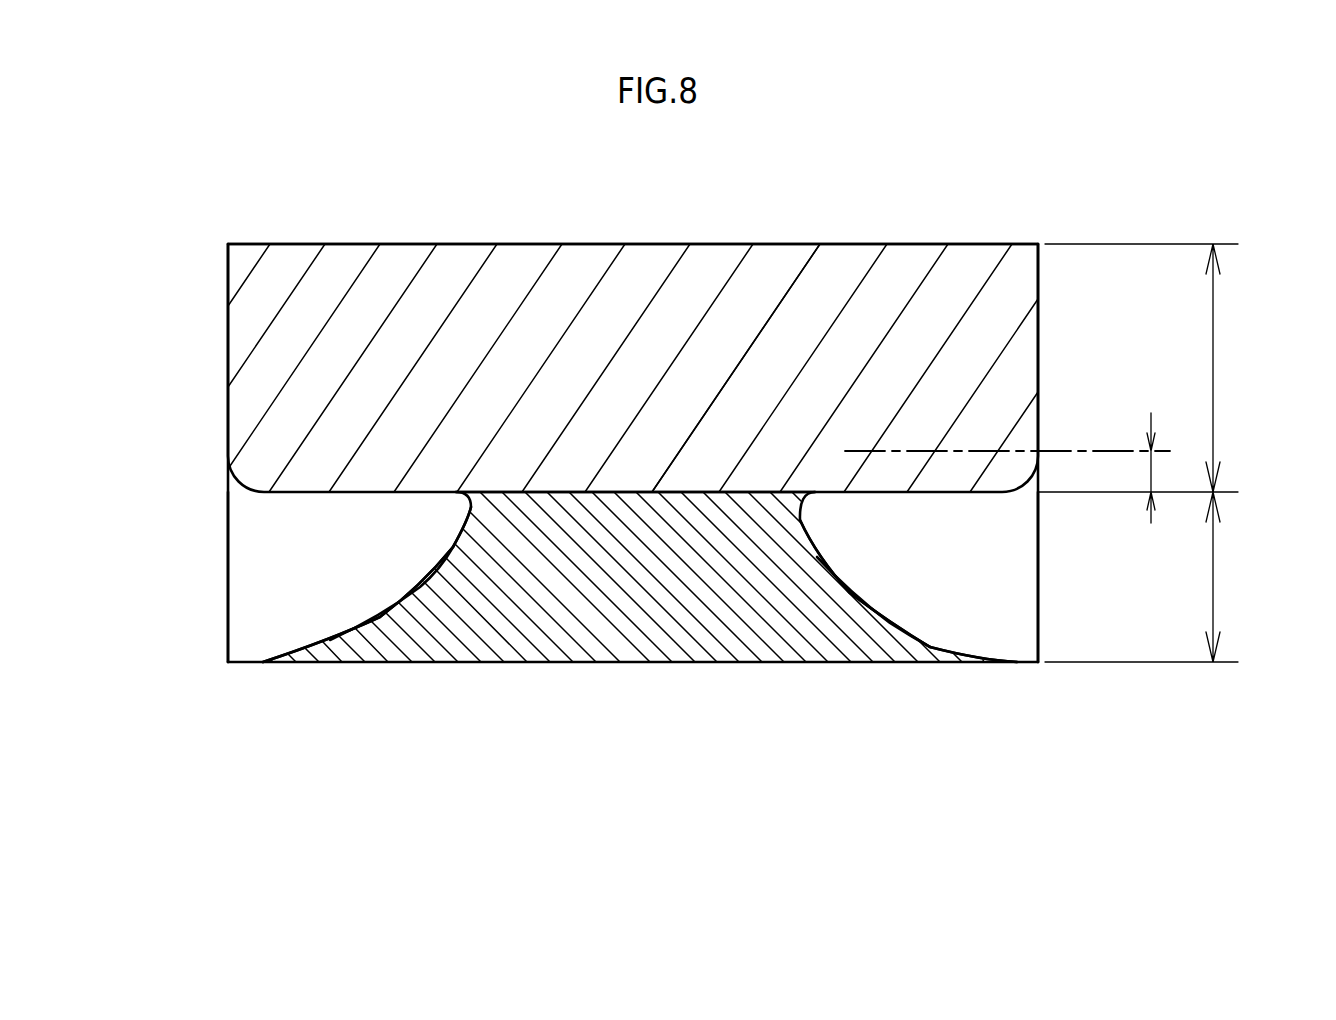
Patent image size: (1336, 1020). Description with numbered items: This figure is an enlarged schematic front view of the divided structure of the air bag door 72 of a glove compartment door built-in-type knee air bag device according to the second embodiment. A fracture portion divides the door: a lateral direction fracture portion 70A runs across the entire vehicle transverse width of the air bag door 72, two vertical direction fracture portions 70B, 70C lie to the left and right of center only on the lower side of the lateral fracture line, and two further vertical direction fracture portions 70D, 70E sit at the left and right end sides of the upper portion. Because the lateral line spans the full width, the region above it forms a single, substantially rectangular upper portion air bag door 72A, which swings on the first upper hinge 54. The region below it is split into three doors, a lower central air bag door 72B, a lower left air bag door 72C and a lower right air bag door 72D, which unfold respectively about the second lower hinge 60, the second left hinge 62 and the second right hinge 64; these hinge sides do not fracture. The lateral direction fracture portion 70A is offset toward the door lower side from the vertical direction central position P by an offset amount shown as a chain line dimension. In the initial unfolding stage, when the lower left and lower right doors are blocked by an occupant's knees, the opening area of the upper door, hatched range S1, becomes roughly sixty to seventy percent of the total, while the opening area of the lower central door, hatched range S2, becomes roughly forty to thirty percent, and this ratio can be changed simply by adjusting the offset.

The air bag door 72 is at (1001, 208).
The upper portion air bag door 72A is at (763, 267).
The lower central air bag door 72B is at (665, 638).
The lower left air bag door 72C is at (357, 598).
The lower right air bag door 72D is at (962, 630).
The first upper hinge 54 is at (858, 244).
The second lower hinge 60 is at (730, 665).
The second left hinge 62 is at (230, 599).
The second right hinge 64 is at (1040, 587).
The lateral direction fracture portion 70A is at (542, 495).
The vertical direction fracture portion 70B is at (407, 605).
The vertical direction fracture portion 70C is at (863, 595).
The vertical direction fracture portion 70D is at (227, 432).
The vertical direction fracture portion 70E is at (1090, 316).
The vertical direction central position P is at (1102, 448).
The opening surface area of upper portion air bag door S1 is at (1213, 380).
The opening surface area of lower central air bag door S2 is at (1213, 586).